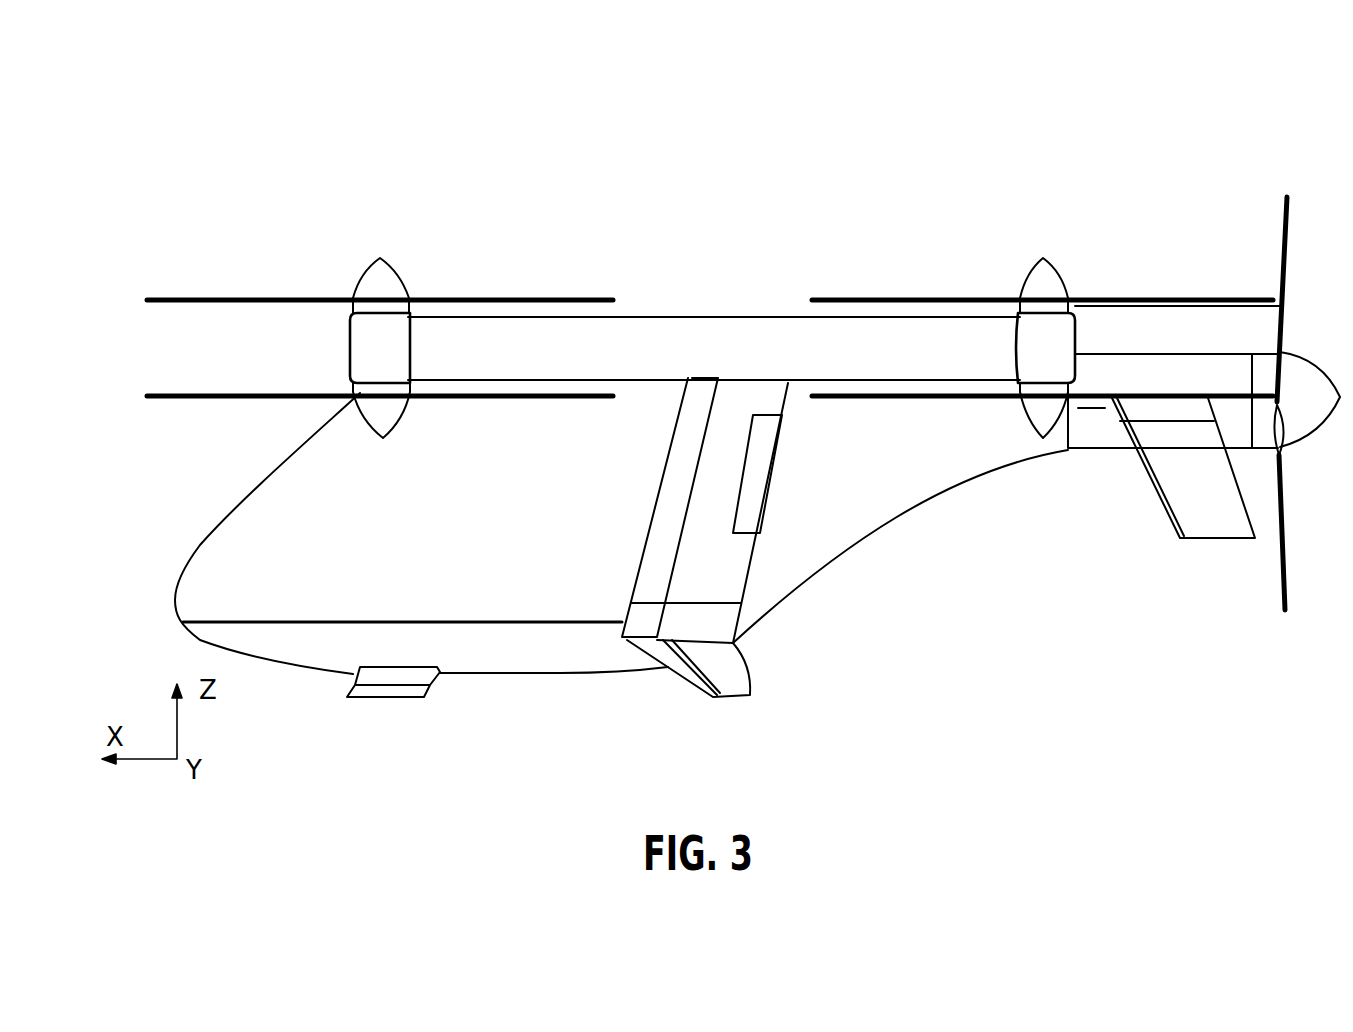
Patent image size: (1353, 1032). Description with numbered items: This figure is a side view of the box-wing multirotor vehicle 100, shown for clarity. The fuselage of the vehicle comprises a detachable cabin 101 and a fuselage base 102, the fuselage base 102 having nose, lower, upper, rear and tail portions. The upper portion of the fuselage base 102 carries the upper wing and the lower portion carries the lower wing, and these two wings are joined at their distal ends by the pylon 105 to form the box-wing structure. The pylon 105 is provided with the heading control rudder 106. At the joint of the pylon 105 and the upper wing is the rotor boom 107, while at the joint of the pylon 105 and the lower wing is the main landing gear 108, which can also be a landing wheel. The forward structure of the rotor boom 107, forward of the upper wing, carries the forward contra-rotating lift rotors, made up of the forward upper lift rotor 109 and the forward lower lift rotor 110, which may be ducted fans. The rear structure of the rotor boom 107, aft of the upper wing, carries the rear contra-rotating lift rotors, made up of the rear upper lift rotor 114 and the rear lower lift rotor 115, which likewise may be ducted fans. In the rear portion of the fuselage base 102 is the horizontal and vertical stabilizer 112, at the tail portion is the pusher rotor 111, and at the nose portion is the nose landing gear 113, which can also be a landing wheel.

The box-wing multirotor vehicle 100 is at (621, 160).
The detachable cabin 101 is at (203, 529).
The fuselage base 102 is at (503, 686).
The pylon 105 is at (752, 567).
The heading control rudder 106 is at (770, 483).
The rotor boom 107 is at (756, 292).
The main landing gear 108 is at (750, 692).
The forward upper lift rotor 109 is at (287, 297).
The forward lower lift rotor 110 is at (258, 400).
The pusher rotor 111 is at (1283, 230).
The horizontal and vertical stabilizer 112 is at (1197, 538).
The nose landing gear 113 is at (353, 697).
The rear upper lift rotor 114 is at (947, 300).
The rear lower lift rotor 115 is at (952, 400).